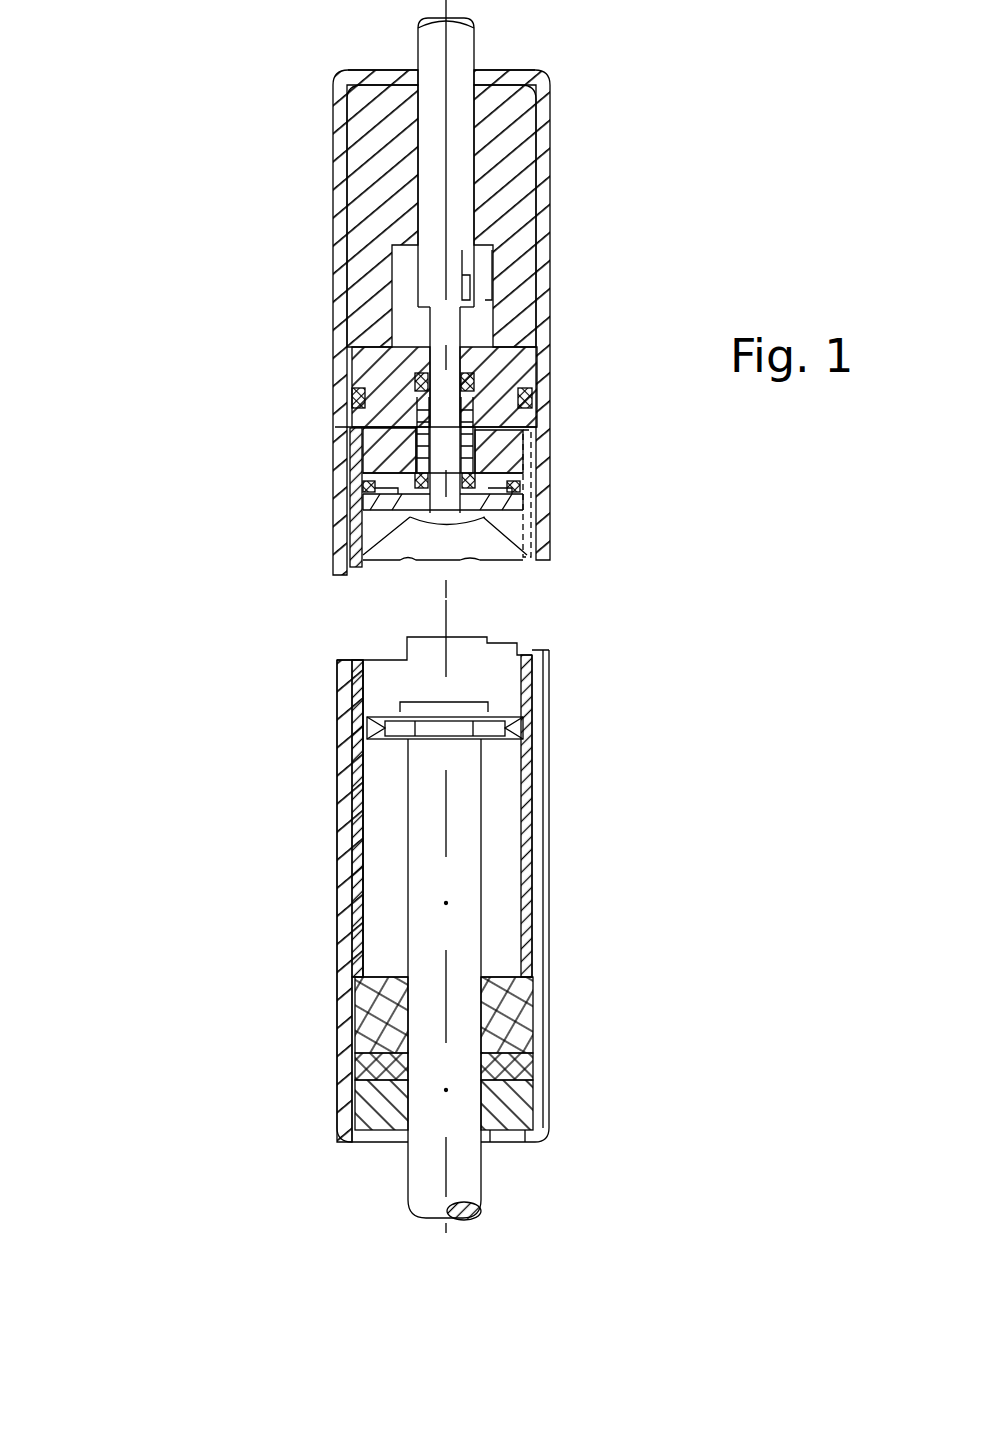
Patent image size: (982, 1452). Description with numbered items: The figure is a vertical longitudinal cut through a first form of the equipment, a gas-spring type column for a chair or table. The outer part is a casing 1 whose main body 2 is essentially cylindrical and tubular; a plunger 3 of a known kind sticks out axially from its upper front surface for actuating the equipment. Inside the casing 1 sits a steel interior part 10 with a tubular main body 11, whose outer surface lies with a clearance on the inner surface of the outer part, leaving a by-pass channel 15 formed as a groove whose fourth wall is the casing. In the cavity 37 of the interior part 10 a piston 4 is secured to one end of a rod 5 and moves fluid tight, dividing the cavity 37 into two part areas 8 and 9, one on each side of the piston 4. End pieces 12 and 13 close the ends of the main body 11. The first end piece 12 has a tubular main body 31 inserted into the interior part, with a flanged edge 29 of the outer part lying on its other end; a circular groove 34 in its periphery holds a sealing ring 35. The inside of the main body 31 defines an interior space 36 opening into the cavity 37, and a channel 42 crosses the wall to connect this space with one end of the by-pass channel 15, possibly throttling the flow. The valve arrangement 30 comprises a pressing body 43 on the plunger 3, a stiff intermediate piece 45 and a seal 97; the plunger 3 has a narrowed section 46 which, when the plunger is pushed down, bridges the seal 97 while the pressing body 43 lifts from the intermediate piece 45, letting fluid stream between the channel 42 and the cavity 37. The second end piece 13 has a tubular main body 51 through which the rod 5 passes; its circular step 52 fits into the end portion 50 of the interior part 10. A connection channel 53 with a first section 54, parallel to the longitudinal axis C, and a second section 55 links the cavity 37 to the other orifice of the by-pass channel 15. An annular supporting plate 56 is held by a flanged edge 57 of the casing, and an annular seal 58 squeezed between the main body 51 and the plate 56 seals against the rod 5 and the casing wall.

The casing 1 is at (125, 571).
The main body 2 is at (387, 322).
The plunger 3 is at (351, 153).
The piston 4 is at (379, 687).
The rod 5 is at (393, 1028).
The part area 8 is at (487, 689).
The part area 9 is at (510, 833).
The interior part 10 is at (655, 695).
The main body 11 is at (292, 901).
The end piece 12 is at (365, 216).
The end piece 13 is at (360, 992).
The by-pass channel 15 is at (668, 805).
The flanged edge 29 is at (494, 35).
The valve arrangement 30 is at (542, 446).
The main body 31 is at (572, 260).
The circular groove 34 is at (361, 334).
The sealing ring 35 is at (356, 359).
The interior space 36 is at (350, 438).
The cavity 37 is at (286, 904).
The channel 42 is at (504, 421).
The pressing body 43 is at (374, 564).
The intermediate piece 45 is at (354, 497).
The narrowed section 46 is at (546, 345).
The end portion 50 is at (600, 816).
The main body 51 is at (528, 977).
The circular step 52 is at (300, 1097).
The connection channel 53 is at (584, 1053).
The first section 54 is at (523, 1105).
The second section 55 is at (578, 1159).
The supporting plate 56 is at (300, 1183).
The flanged edge 57 is at (547, 1218).
The annular seal 58 is at (587, 1195).
The seal 97 is at (512, 497).
The longitudinal axis C is at (460, 678).